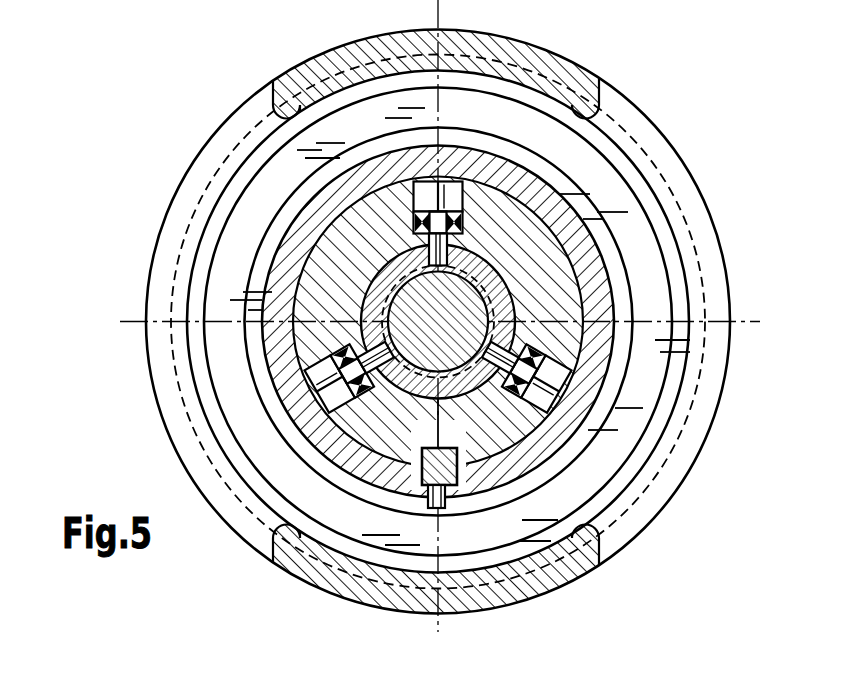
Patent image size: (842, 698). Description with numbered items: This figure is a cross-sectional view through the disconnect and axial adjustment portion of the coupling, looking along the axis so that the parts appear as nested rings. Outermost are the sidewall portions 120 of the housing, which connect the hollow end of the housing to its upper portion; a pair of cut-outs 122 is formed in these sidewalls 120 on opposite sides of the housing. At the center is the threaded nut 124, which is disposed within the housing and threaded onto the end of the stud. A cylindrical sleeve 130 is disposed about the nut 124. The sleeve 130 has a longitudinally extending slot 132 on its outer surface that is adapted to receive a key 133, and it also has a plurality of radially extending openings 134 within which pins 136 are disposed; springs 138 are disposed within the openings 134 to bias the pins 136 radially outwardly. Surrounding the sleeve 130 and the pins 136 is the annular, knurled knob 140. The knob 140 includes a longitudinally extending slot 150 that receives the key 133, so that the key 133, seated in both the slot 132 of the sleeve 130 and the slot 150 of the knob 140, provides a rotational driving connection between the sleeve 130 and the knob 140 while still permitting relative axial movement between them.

The sidewall portions 120 is at (480, 45).
The cut-outs 122 is at (683, 187).
The threaded nut 124 is at (487, 285).
The cylindrical sleeve 130 is at (340, 247).
The slot 132 is at (430, 503).
The key 133 is at (441, 505).
The radially extending openings 134 is at (335, 405).
The pins 136 is at (550, 382).
The springs 138 is at (520, 325).
The knurled knob 140 is at (262, 272).
The slot 150 is at (457, 498).